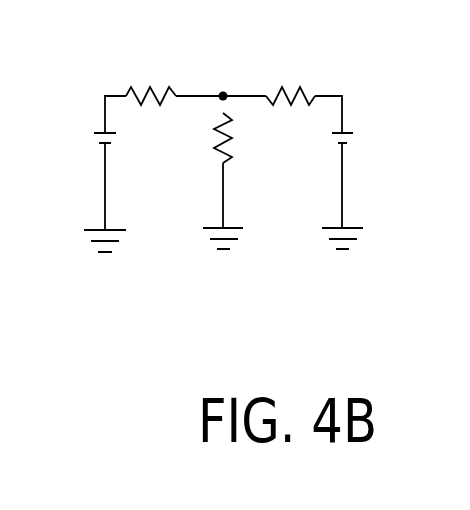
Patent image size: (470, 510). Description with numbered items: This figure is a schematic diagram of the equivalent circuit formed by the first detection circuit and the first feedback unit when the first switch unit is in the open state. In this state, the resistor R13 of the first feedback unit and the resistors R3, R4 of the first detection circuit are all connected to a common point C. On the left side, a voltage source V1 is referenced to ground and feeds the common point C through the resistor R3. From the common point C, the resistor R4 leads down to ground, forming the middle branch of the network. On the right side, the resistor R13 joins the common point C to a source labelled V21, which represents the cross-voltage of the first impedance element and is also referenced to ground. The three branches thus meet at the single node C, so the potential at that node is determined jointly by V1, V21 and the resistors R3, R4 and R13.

The voltage source V1 is at (85, 133).
The resistor R3 is at (151, 77).
The common point C is at (222, 80).
The resistor R4 is at (240, 138).
The resistor R13 is at (294, 79).
The cross-voltage of the first impedance element V21 is at (369, 142).